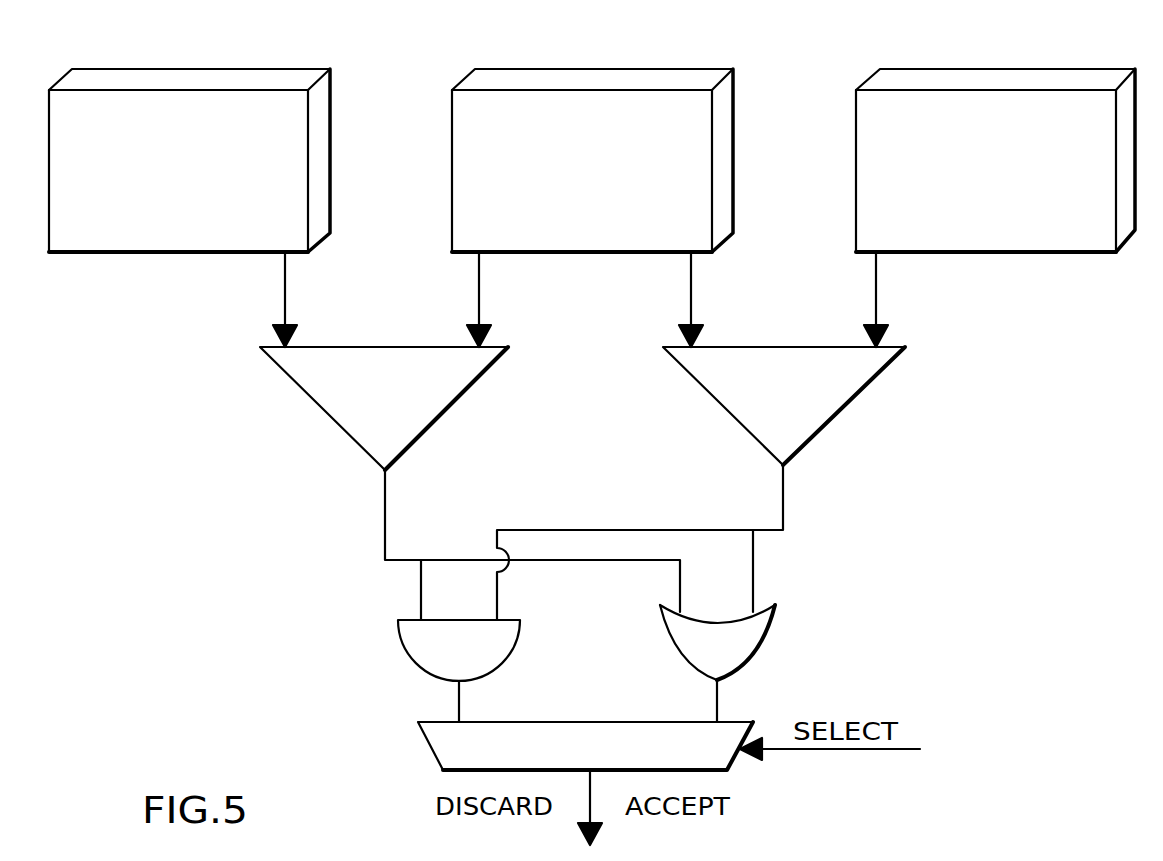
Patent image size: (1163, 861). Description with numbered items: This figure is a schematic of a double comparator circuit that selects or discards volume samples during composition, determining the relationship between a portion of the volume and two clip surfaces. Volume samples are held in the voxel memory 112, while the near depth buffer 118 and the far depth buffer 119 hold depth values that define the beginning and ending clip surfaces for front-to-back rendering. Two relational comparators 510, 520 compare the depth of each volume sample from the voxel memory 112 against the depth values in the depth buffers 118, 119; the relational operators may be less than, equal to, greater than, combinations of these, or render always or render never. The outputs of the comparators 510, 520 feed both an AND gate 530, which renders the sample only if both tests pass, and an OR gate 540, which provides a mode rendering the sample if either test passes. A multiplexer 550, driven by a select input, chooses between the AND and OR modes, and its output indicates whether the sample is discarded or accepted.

The near depth buffer 118 is at (209, 80).
The voxel memory 112 is at (606, 80).
The far depth buffer 119 is at (1017, 78).
The relational comparator 510 is at (384, 408).
The relational comparator 520 is at (784, 406).
The AND gate 530 is at (459, 671).
The OR gate 540 is at (717, 663).
The multiplexer 550 is at (585, 746).